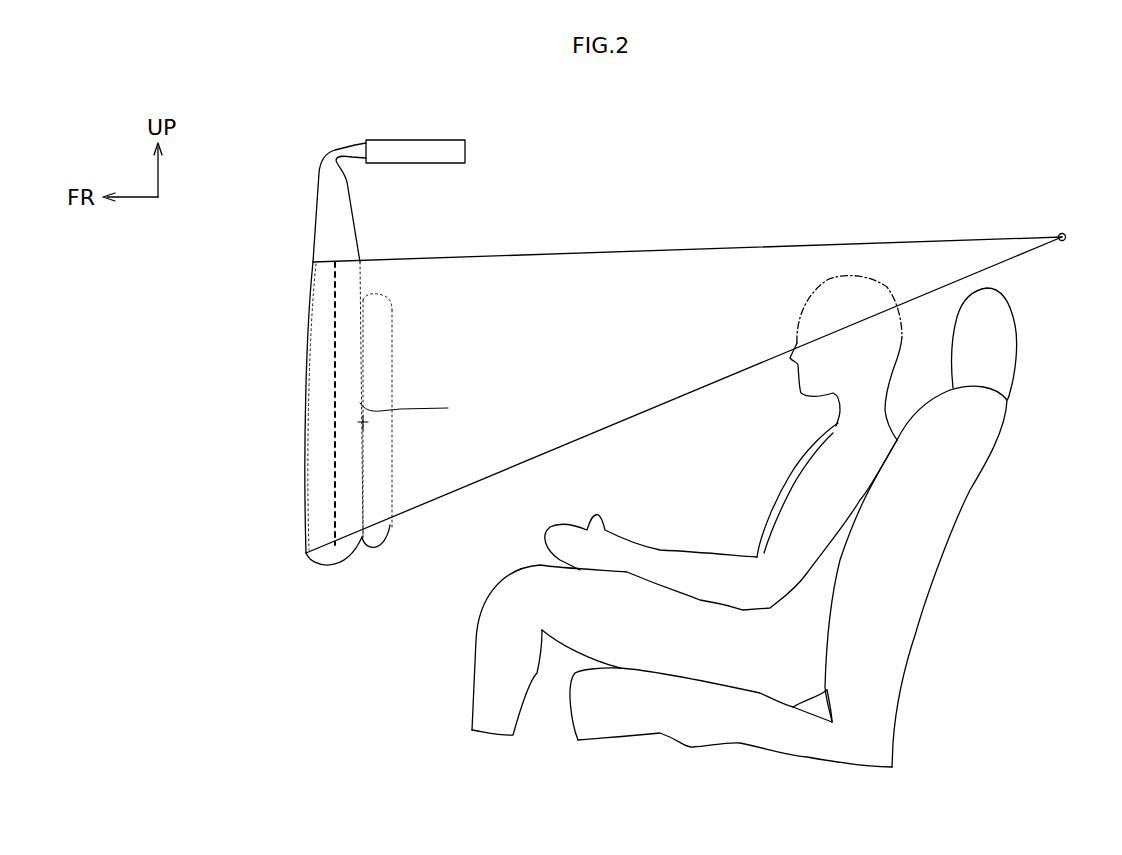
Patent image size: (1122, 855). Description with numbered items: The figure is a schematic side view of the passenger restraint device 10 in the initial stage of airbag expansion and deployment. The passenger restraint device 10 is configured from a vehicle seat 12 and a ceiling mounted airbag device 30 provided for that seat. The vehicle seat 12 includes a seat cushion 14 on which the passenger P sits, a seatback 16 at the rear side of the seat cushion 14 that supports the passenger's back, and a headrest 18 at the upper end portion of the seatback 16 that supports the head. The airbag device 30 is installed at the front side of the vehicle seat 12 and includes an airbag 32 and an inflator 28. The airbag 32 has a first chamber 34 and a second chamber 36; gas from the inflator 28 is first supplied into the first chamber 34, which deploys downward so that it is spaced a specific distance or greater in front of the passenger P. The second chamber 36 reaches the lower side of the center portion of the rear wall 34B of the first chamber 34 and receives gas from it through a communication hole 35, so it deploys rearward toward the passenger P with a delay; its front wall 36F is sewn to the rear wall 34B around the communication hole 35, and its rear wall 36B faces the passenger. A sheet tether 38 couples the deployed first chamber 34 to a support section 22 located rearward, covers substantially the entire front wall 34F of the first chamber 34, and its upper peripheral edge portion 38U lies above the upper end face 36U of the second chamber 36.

The passenger restraint device 10 is at (490, 146).
The vehicle seat 12 is at (1025, 322).
The seat cushion 14 is at (742, 725).
The seatback 16 is at (942, 548).
The headrest 18 is at (1000, 332).
The support section 22 is at (1060, 233).
The inflator 28 is at (425, 149).
The ceiling mounted airbag device 30 is at (365, 180).
The airbag 32 is at (310, 245).
The first chamber 34 is at (341, 439).
The front wall of the first chamber 34F is at (305, 408).
The rear wall of the first chamber 34B is at (367, 274).
The communication hole 35 is at (474, 420).
The second chamber 36 is at (418, 455).
The upper end face of the second chamber 36U is at (368, 295).
The rear wall of the second chamber 36B is at (393, 358).
The front wall of the second chamber 36F is at (370, 490).
The sheet tether 38 is at (684, 365).
The upper peripheral edge portion of the sheet tether 38U is at (683, 246).
The passenger P is at (793, 458).